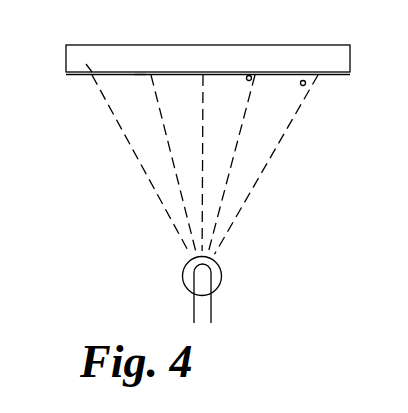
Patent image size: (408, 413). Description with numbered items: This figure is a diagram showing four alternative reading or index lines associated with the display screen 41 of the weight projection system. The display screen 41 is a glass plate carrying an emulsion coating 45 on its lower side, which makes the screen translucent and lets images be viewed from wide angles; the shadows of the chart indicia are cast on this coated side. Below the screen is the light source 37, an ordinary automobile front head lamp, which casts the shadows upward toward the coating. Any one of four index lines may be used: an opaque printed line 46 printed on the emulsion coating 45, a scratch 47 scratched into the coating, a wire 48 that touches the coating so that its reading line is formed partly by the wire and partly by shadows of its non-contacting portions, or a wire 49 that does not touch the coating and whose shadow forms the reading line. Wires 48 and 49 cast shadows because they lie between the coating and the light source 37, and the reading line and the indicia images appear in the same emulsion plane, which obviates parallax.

The display screen 41 is at (346, 91).
The emulsion coating 45 is at (71, 76).
The opaque printed line 46 is at (102, 75).
The scratch 47 is at (139, 75).
The wire 48 is at (247, 80).
The wire 49 is at (300, 85).
The light source 37 is at (219, 285).